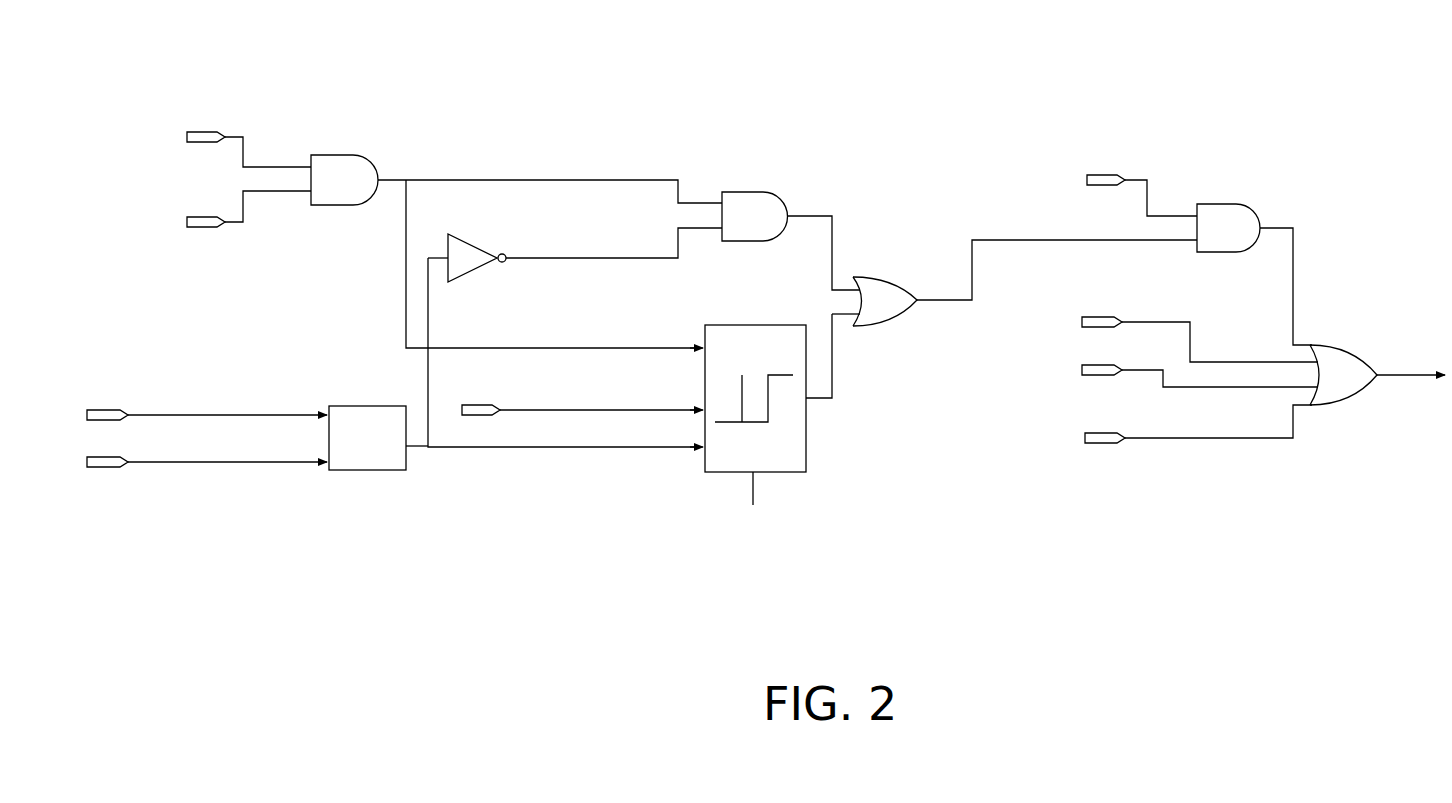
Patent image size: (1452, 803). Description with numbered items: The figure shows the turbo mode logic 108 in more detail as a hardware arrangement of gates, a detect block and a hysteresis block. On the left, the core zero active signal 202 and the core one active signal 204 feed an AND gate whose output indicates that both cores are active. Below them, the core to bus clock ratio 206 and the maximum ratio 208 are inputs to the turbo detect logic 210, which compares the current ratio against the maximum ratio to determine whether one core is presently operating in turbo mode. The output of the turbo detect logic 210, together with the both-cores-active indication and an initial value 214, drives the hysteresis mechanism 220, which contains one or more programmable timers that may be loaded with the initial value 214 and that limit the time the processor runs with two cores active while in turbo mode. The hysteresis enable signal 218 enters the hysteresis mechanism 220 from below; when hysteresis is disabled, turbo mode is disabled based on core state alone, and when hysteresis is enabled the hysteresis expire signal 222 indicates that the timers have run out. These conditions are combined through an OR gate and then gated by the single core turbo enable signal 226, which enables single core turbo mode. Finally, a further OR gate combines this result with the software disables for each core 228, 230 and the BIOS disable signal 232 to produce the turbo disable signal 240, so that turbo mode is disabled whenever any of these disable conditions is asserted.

The turbo mode logic 108 is at (1292, 51).
The Core 0 Active signal 202 is at (176, 123).
The Core 1 Active signal 204 is at (176, 206).
The core to bus clock ratio 206 is at (202, 410).
The maximum ratio 208 is at (202, 459).
The turbo detect logic 210 is at (354, 469).
The initial value 214 is at (585, 402).
The hysteresis enable signal 218 is at (740, 569).
The hysteresis mechanism 220 is at (740, 460).
The hysteresis expire signal 222 is at (853, 396).
The 1_CORE_TURBO_EN signal 226 is at (1160, 174).
The core 0 software disable signal 228 is at (1245, 359).
The core 1 software disable signal 230 is at (1245, 384).
The BIOS disable signal 232 is at (1245, 434).
The Turbo Disable signal 240 is at (1407, 369).